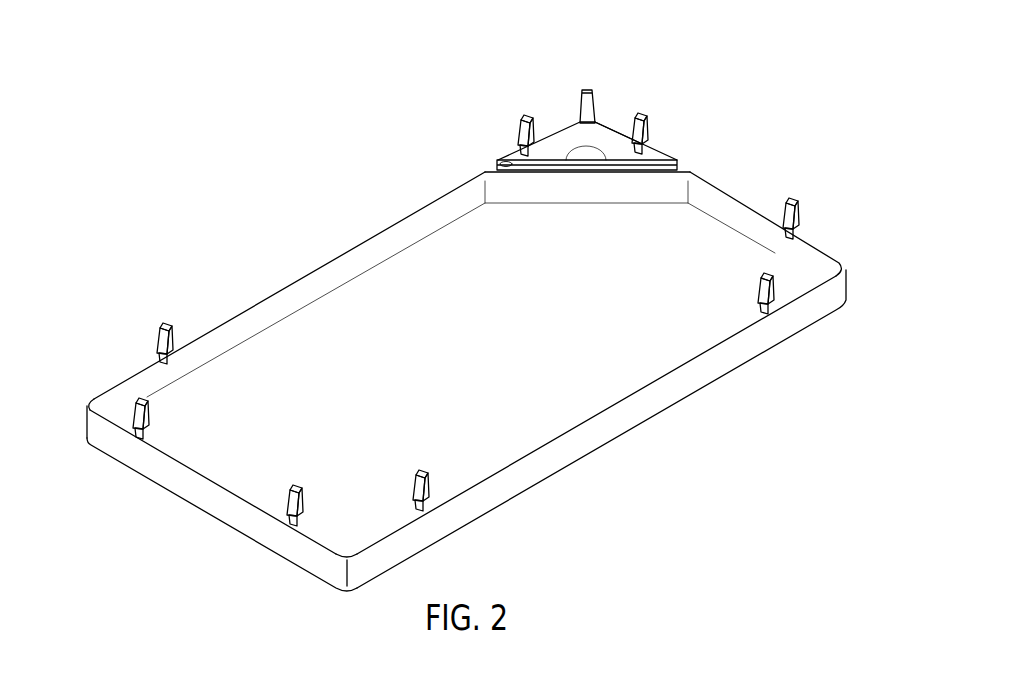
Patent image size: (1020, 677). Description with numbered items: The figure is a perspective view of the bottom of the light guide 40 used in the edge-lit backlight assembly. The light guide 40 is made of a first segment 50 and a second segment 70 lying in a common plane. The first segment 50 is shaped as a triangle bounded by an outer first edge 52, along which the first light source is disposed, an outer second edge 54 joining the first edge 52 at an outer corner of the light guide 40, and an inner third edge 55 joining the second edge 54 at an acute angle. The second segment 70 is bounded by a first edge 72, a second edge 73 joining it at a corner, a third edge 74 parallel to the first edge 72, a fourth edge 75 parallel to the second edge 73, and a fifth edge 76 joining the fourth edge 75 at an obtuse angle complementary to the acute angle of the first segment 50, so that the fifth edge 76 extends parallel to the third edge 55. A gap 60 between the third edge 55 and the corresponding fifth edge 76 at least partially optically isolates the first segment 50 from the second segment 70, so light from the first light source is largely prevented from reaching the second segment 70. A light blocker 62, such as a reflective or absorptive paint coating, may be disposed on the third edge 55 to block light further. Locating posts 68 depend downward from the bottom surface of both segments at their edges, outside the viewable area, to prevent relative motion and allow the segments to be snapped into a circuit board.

The light guide 40 is at (489, 371).
The first segment 50 is at (650, 155).
The first edge 52 is at (565, 122).
The second edge 54 is at (609, 122).
The third edge 55 is at (501, 162).
The gap 60 is at (570, 123).
The light blocker 62 is at (683, 162).
The locating posts 68 is at (584, 88).
The second segment 70 is at (250, 326).
The first edge 72 is at (338, 250).
The second edge 73 is at (186, 481).
The third edge 74 is at (633, 407).
The fourth edge 75 is at (827, 252).
The fifth edge 76 is at (681, 170).